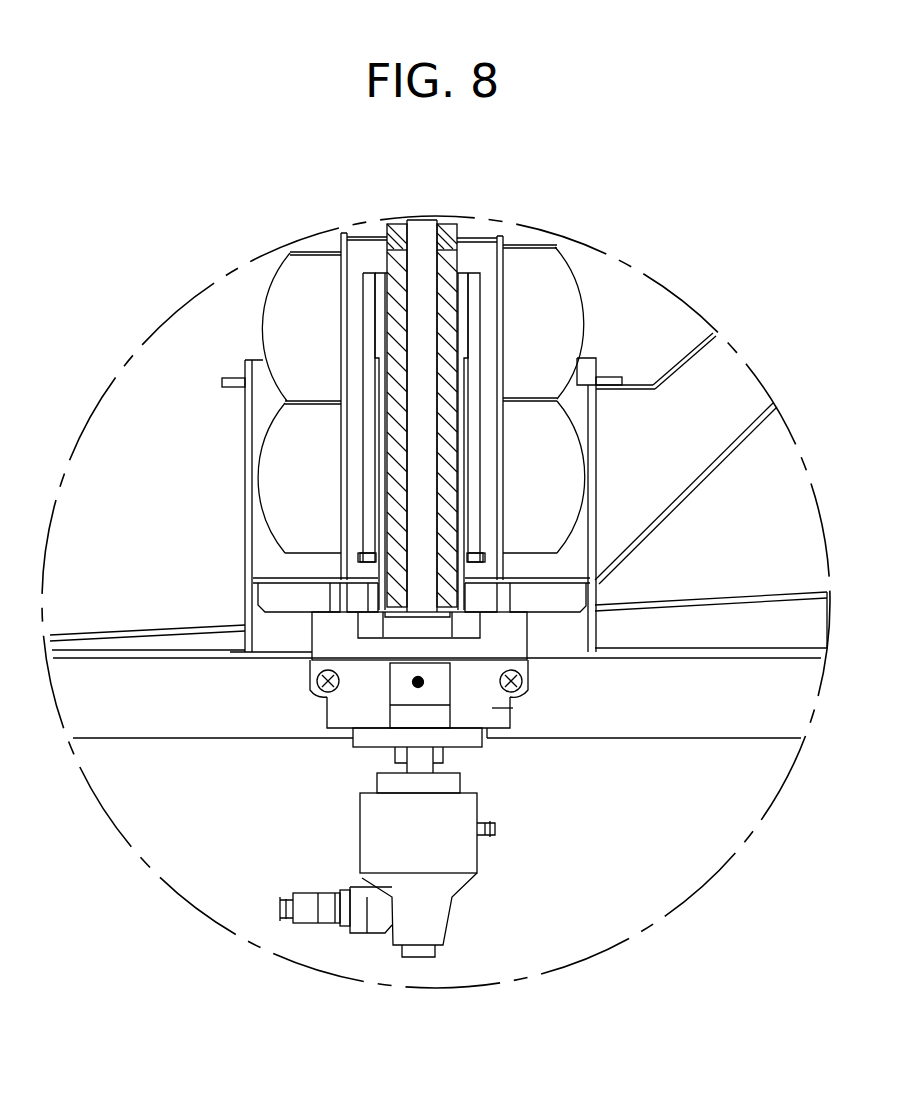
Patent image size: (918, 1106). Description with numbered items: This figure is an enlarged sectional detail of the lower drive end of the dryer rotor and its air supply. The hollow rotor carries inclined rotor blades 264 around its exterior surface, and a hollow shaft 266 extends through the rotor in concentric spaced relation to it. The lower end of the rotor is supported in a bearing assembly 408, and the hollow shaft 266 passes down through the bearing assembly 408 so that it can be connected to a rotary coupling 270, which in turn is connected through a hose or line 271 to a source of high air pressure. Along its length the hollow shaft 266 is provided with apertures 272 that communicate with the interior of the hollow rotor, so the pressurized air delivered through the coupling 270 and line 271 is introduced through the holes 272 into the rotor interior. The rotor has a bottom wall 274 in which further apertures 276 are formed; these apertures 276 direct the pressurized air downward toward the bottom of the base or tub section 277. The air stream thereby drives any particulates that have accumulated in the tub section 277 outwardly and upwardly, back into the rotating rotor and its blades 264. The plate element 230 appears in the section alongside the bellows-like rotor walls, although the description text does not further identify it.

The support plate 230 is at (340, 318).
The rotor blades 264 is at (280, 278).
The hollow shaft 266 is at (445, 322).
The rotary coupling 270 is at (457, 855).
The hose or line 271 is at (285, 902).
The apertures 272 is at (450, 226).
The bottom wall 274 is at (345, 562).
The apertures 276 is at (360, 555).
The base or tub section 277 is at (247, 462).
The bearing assembly 408 is at (517, 710).